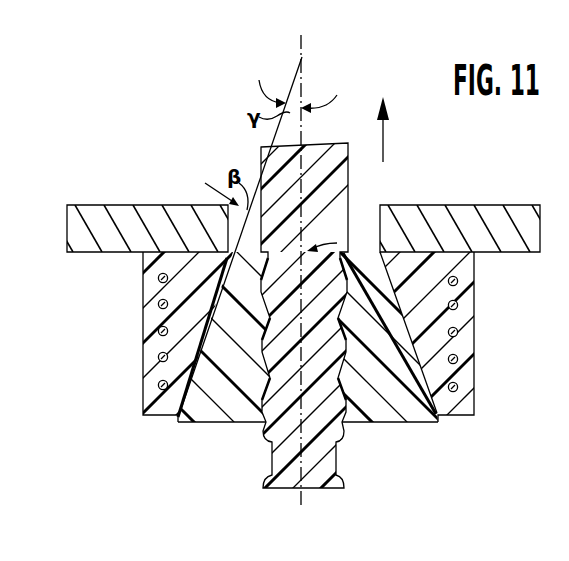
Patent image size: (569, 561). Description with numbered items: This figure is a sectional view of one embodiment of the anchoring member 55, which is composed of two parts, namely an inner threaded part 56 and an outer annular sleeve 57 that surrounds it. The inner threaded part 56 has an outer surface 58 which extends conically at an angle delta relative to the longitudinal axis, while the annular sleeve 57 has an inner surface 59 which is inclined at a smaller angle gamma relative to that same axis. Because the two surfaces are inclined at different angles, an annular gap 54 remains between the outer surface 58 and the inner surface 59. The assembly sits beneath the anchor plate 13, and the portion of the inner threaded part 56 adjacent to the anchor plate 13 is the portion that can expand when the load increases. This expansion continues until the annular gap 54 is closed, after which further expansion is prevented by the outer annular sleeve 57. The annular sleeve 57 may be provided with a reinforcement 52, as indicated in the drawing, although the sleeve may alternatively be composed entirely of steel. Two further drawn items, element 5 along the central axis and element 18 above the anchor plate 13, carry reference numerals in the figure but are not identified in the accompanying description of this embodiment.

The clamping pin 5 is at (338, 453).
The anchor plate 13 is at (123, 212).
The pulling direction arrow 18 is at (383, 152).
The reinforcement 52 is at (157, 363).
The annular gap 54 is at (408, 312).
The anchoring member 55 is at (284, 361).
The inner threaded part 56 is at (213, 410).
The outer annular sleeve 57 is at (468, 386).
The outer surface 58 is at (407, 360).
The inner surface 59 is at (197, 299).